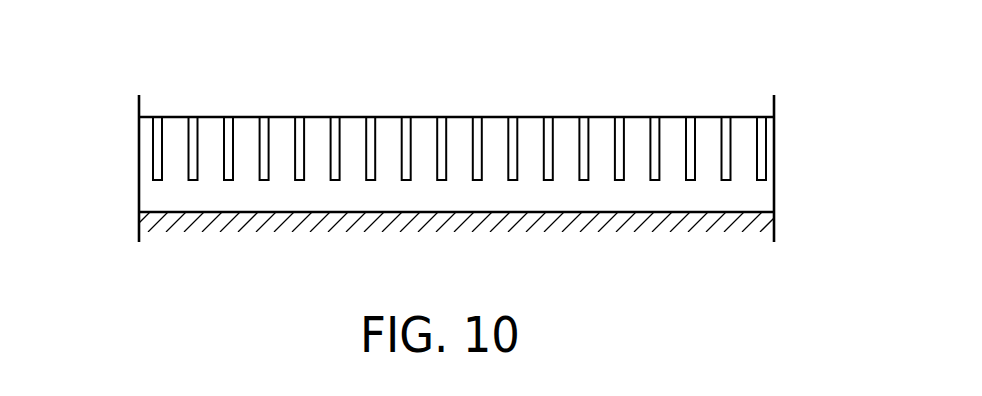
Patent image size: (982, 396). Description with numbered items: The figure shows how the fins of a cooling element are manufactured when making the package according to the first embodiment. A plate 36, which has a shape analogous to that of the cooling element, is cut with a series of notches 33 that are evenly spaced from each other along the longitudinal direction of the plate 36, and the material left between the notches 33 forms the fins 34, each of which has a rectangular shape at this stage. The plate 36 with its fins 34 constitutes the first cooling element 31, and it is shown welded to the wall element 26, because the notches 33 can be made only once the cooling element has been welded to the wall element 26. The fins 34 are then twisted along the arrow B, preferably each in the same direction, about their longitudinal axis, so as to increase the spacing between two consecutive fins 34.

The wall element 26 is at (417, 220).
The first cooling element 31 is at (642, 105).
The notches 33 is at (157, 118).
The fins 34 is at (145, 138).
The plate 36 is at (760, 195).
The arrow B is at (166, 185).